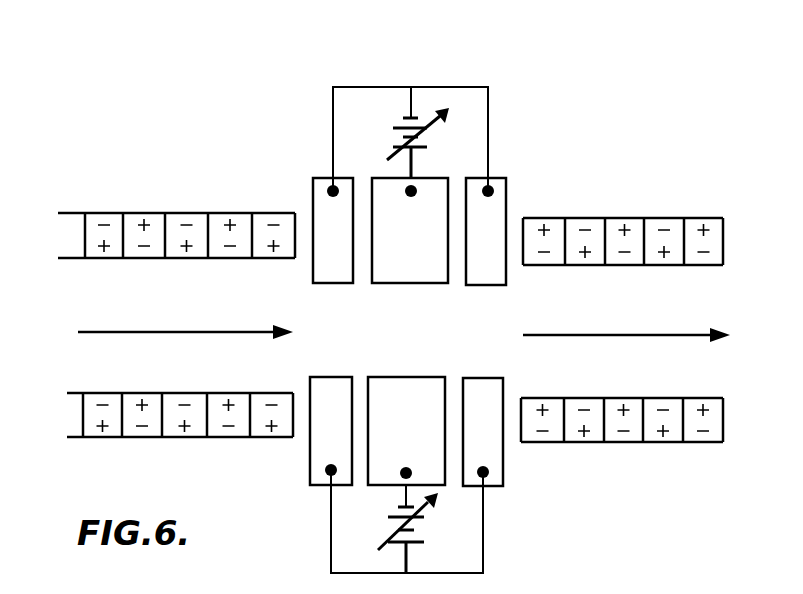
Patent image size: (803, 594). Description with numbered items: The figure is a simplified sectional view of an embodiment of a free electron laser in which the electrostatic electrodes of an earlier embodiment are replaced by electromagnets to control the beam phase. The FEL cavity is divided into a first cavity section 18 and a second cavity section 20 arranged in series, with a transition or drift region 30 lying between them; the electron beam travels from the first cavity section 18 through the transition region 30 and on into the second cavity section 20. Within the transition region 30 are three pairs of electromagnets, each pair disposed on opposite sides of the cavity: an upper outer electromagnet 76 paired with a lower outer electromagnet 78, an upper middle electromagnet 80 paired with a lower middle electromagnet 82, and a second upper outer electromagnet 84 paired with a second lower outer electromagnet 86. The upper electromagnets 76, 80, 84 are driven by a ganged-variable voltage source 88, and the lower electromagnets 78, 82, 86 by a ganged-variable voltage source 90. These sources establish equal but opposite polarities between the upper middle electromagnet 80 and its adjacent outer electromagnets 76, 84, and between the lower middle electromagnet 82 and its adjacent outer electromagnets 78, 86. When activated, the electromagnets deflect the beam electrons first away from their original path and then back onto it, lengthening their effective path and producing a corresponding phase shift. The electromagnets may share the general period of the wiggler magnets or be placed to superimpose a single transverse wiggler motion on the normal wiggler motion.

The first cavity section 18 is at (298, 189).
The second cavity section 20 is at (520, 197).
The transition or drift region 30 is at (312, 45).
The upper outer electromagnet 76 is at (313, 268).
The lower outer electromagnet 78 is at (310, 382).
The upper middle electromagnet 80 is at (408, 283).
The lower middle electromagnet 82 is at (418, 377).
The upper outer electromagnet 84 is at (490, 285).
The lower outer electromagnet 86 is at (492, 378).
The ganged-variable voltage source 88 is at (425, 145).
The ganged-variable voltage source 90 is at (425, 533).